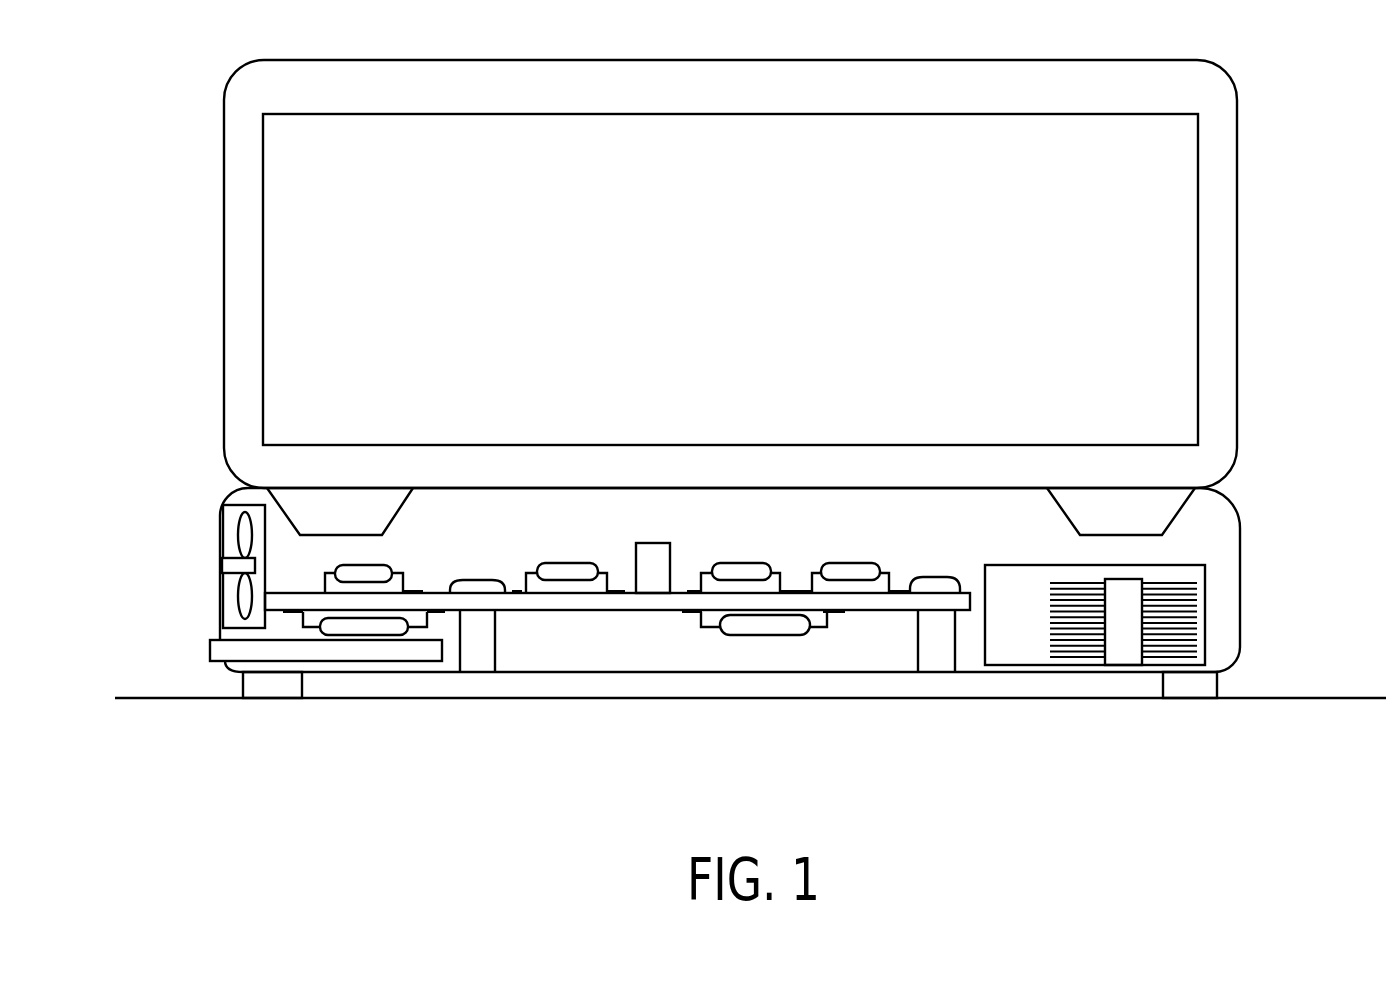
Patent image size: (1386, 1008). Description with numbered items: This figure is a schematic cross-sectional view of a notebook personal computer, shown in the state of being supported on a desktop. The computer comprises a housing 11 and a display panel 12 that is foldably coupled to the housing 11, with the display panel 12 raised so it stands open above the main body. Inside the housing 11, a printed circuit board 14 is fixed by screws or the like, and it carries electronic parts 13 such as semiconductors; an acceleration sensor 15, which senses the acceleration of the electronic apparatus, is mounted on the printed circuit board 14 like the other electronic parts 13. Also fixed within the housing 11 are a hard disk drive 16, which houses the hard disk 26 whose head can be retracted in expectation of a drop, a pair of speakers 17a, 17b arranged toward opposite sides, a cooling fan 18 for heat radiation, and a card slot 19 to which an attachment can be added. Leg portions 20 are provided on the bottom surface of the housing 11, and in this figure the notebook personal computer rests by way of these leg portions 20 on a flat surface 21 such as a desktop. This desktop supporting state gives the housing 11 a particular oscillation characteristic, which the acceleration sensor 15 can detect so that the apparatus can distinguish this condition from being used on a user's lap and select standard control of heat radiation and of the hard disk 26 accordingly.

The housing 11 is at (1243, 553).
The display panel 12 is at (1236, 265).
The electronic parts 13 is at (777, 637).
The printed circuit board 14 is at (877, 612).
The acceleration sensor 15 is at (653, 583).
The hard disk drive 16 is at (1020, 650).
The speaker 17a is at (1080, 518).
The speaker 17b is at (398, 518).
The cooling fan 18 is at (228, 542).
The card slot 19 is at (222, 653).
The leg portions 20 is at (1218, 685).
The flat surface 21 is at (1350, 697).
The hard disk 26 is at (1118, 650).